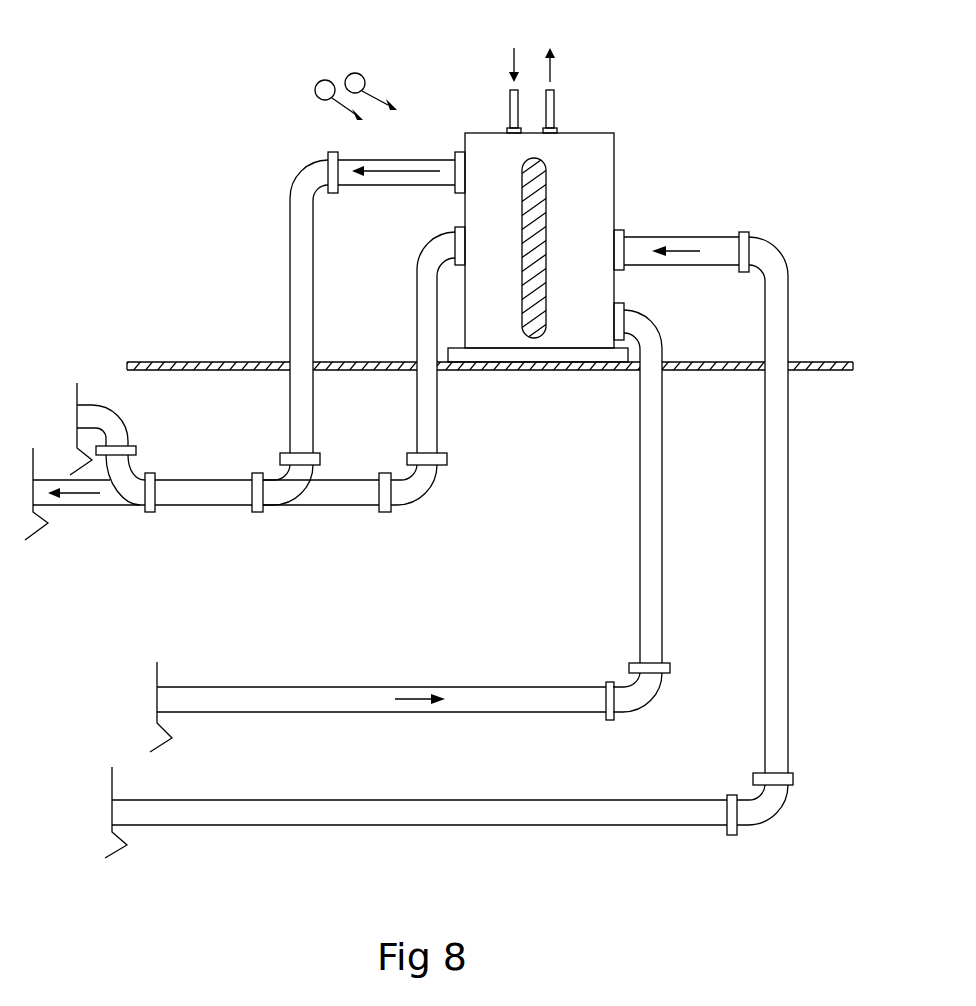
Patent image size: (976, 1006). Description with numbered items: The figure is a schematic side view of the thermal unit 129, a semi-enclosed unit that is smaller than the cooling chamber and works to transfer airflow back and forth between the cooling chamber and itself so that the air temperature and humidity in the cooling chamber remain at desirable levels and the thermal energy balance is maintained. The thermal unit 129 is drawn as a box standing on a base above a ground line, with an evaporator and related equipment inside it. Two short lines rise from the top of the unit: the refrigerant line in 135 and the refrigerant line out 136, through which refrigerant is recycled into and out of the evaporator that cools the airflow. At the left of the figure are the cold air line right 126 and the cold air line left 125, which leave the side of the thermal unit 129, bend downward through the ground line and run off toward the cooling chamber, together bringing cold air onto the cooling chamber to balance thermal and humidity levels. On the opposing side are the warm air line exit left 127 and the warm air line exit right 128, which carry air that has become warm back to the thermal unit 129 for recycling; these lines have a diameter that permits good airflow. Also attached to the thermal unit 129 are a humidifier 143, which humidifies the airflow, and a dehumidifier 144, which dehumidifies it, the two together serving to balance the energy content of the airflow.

The cold air line left 125 is at (417, 327).
The cold air line right 126 is at (290, 297).
The warm air line exit left 127 is at (765, 578).
The warm air line exit right 128 is at (640, 562).
The thermal unit 129 is at (614, 178).
The refrigerant line in 135 is at (510, 118).
The refrigerant line out 136 is at (555, 118).
The humidifier 143 is at (347, 76).
The dehumidifier 144 is at (315, 88).